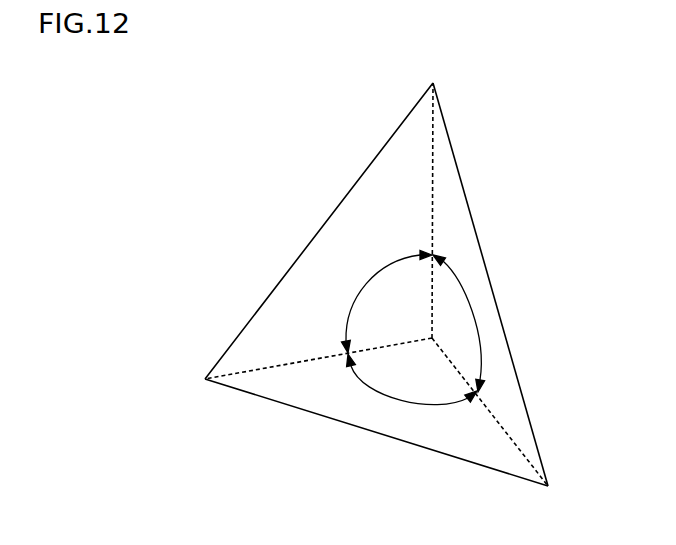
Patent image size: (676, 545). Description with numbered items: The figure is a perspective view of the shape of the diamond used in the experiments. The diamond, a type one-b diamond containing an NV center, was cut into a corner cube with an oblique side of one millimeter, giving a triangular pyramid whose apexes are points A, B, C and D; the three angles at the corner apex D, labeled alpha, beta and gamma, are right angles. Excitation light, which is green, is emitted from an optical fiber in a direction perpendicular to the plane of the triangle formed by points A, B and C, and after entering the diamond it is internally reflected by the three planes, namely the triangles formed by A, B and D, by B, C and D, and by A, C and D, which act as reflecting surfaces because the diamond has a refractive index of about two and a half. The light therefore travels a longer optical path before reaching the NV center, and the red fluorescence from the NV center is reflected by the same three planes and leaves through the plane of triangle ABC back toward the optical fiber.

The point A is at (364, 284).
The point B is at (502, 297).
The point C is at (434, 68).
The point D is at (376, 284).